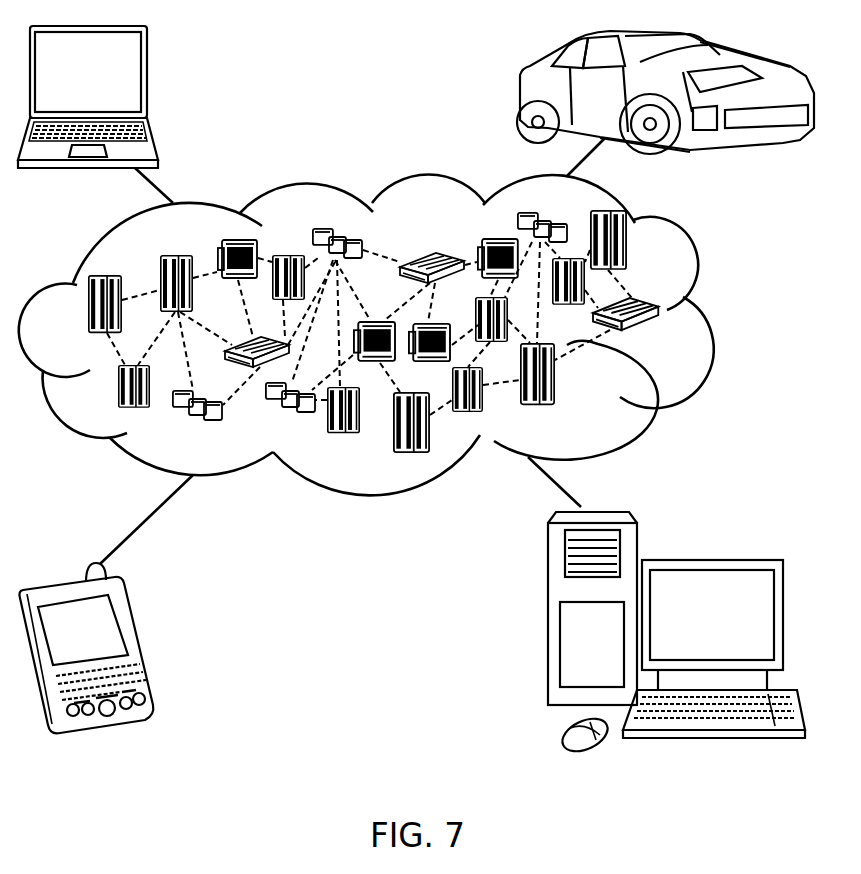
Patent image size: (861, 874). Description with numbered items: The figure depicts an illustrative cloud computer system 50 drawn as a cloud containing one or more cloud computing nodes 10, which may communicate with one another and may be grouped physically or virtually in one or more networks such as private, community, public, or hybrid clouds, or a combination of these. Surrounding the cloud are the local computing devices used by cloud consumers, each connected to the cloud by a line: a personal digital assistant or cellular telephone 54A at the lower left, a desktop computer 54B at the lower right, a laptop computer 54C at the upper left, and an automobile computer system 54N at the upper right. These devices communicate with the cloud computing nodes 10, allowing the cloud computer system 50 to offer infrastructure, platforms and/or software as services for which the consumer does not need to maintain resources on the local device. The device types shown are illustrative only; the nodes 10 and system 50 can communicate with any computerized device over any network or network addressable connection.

The cloud computing node 10 is at (675, 341).
The cloud computer system 50 is at (708, 320).
The personal digital assistant or cellular telephone 54A is at (142, 637).
The desktop computer 54B is at (707, 560).
The laptop computer 54C is at (149, 80).
The automobile computer system 54N is at (522, 92).